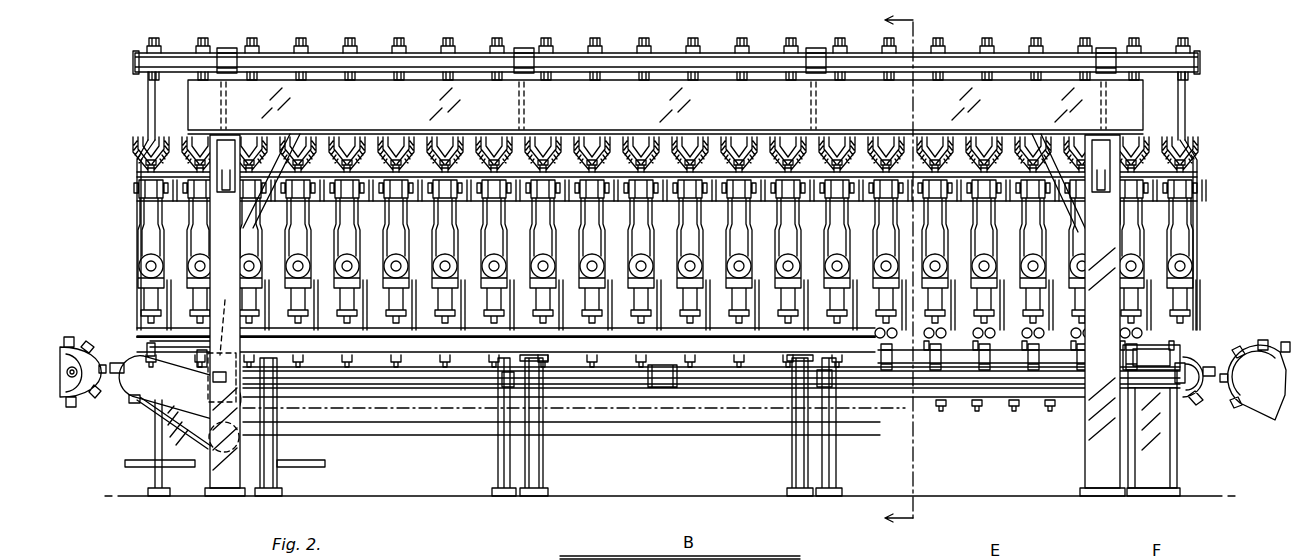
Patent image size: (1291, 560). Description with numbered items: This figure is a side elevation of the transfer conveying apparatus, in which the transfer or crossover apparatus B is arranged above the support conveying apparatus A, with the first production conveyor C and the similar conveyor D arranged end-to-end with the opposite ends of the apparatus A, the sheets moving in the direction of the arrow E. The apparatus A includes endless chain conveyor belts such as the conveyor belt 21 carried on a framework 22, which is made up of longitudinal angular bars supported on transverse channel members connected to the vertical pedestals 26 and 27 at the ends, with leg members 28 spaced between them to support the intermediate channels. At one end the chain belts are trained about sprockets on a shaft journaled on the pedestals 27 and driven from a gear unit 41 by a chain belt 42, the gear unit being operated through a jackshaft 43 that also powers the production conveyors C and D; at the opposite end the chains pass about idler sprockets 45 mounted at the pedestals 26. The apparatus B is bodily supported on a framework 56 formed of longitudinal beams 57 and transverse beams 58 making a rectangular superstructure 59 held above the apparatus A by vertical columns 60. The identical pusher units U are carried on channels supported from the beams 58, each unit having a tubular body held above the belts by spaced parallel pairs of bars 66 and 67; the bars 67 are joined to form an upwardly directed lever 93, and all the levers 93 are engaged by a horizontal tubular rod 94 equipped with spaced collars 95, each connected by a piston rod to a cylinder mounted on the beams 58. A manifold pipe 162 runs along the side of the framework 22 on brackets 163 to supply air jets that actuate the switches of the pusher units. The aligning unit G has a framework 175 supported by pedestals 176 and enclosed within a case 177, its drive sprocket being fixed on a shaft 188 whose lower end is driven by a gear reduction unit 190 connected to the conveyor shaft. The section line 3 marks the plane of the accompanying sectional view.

The collar 95 is at (227, 60).
The longitudinally disposed beam 57 is at (368, 105).
The lever portion 93 is at (148, 97).
The superstructure 59 is at (607, 97).
The tubular rod 94 is at (650, 70).
The transverse beam 58 is at (221, 100).
The bar 67 is at (140, 165).
The bar 66 is at (160, 222).
The shaft 188 is at (220, 349).
The gear reduction unit 190 is at (208, 387).
The chain belt 42 is at (170, 423).
The pedestal 27 is at (163, 480).
The column 60 is at (220, 470).
The gear unit 41 is at (250, 472).
The pedestal 176 is at (270, 448).
The jackshaft 43 is at (322, 465).
The leg member 28 is at (500, 456).
The framework 175 is at (552, 461).
The case 177 is at (686, 350).
The bracket 163 is at (830, 382).
The manifold pipe 162 is at (978, 373).
The framework 56 is at (1100, 442).
The idler sprocket 45 is at (1200, 385).
The conveyor belt 21 is at (1200, 419).
The framework 22 is at (1162, 454).
The pedestal 26 is at (1157, 466).
The conveyor D is at (82, 332).
The first production conveyor C is at (1255, 337).
The pusher unit U is at (129, 147).
The transfer apparatus B is at (1197, 146).
The support conveying apparatus A is at (1036, 411).
The direction arrow E is at (1008, 433).
The aligning unit G is at (612, 350).
The section line 3 is at (929, 532).